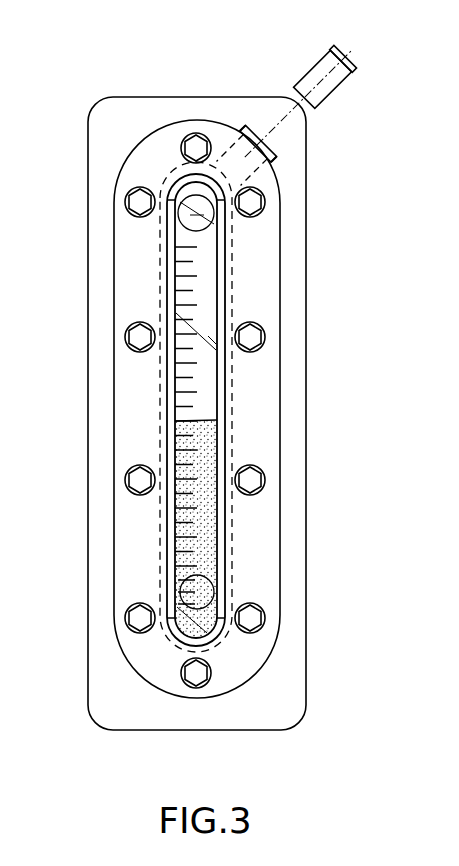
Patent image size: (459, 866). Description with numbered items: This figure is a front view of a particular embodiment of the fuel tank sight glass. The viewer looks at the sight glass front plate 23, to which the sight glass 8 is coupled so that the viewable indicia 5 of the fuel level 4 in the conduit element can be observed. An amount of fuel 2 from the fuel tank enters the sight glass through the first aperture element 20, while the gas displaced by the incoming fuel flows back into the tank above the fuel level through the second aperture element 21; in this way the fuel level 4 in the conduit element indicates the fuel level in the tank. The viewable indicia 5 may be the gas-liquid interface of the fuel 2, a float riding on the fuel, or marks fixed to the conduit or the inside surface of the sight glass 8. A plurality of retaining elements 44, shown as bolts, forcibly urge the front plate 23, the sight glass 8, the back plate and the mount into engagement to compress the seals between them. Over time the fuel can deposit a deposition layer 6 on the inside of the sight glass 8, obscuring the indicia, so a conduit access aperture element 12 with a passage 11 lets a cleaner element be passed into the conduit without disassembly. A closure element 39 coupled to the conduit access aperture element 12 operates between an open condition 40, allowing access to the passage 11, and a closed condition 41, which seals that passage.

The sight glass front plate 23 is at (280, 294).
The retaining elements 44 is at (256, 483).
The viewable indicia 5 is at (175, 357).
The sight glass 8 is at (175, 265).
The fuel 2 is at (207, 458).
The fuel level 4 is at (200, 420).
The second aperture element 21 is at (175, 205).
The first aperture element 20 is at (192, 590).
The open condition 40 is at (348, 107).
The closed condition 41 is at (292, 145).
The conduit access aperture element 12 is at (250, 170).
The closure element 39 is at (270, 157).
The passage 11 is at (238, 150).
The deposition layer 6 is at (196, 108).